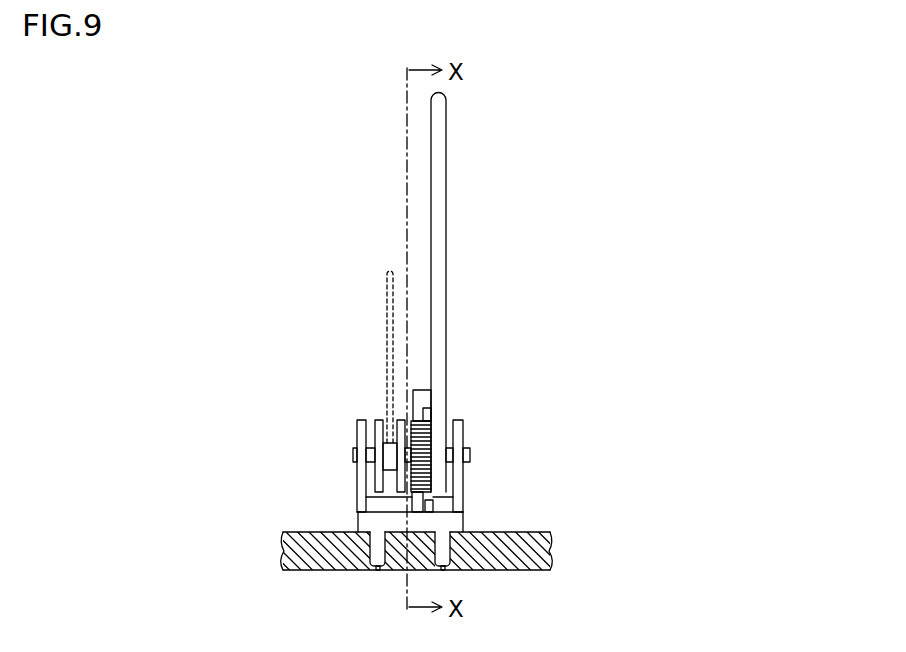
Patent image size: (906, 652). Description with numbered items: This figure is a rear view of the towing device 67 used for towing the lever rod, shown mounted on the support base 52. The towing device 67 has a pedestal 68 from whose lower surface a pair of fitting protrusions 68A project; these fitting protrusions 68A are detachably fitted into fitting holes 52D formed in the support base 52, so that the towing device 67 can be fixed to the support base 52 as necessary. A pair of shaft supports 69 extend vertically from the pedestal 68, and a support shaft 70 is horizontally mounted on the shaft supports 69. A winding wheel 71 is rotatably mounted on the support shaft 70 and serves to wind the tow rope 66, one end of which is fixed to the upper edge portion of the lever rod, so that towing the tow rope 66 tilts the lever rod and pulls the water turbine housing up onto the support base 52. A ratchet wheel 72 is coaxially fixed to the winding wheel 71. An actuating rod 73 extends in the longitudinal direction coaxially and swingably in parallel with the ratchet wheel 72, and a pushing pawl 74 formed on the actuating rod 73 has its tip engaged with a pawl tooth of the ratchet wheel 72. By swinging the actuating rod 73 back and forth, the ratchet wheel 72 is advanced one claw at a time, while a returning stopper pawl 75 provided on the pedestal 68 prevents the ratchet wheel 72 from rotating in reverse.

The support base 52 is at (520, 532).
The fitting holes 52D is at (380, 541).
The tow rope 66 is at (383, 337).
The towing device 67 is at (495, 167).
The pedestal 68 is at (467, 523).
The fitting protrusions 68A is at (377, 570).
The shaft supports 69 is at (357, 437).
The support shaft 70 is at (468, 455).
The winding wheel 71 is at (378, 417).
The ratchet wheel 72 is at (432, 421).
The actuating rod 73 is at (447, 223).
The pushing pawl 74 is at (418, 390).
The returning stopper pawl 75 is at (411, 502).